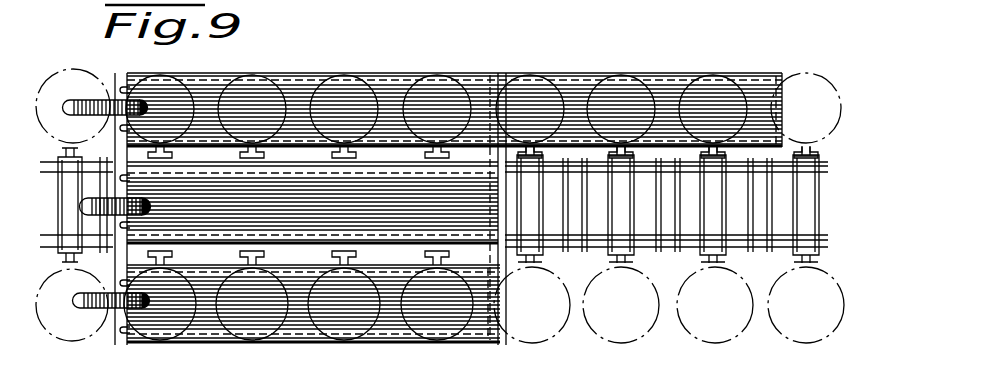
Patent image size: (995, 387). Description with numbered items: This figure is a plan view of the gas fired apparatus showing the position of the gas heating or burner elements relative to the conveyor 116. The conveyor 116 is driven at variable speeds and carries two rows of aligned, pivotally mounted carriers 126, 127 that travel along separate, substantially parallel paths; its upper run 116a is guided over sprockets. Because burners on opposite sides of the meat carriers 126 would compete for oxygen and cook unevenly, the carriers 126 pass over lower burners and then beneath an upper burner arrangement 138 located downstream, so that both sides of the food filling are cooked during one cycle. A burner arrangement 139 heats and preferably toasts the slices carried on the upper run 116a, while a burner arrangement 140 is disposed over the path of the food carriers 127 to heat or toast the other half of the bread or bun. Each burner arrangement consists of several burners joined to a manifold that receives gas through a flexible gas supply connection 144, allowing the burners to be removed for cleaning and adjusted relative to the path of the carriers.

The flexible gas supply connection 144 is at (78, 100).
The carriers 126 is at (215, 78).
The upper burner arrangement 138 is at (437, 80).
The burner arrangement 139 is at (489, 230).
The burner arrangement 140 is at (470, 335).
The conveyor 116 is at (738, 243).
The upper run 116a is at (547, 240).
The carriers 127 is at (90, 338).